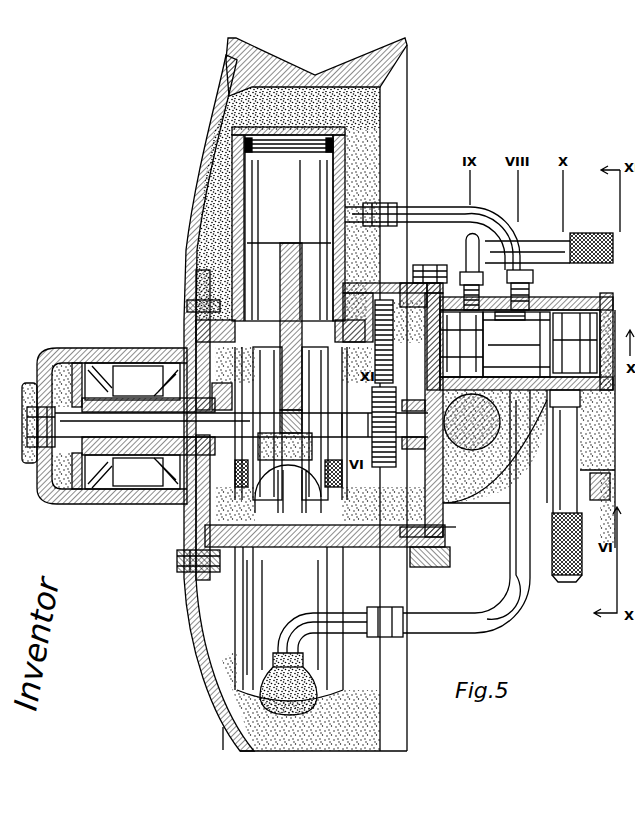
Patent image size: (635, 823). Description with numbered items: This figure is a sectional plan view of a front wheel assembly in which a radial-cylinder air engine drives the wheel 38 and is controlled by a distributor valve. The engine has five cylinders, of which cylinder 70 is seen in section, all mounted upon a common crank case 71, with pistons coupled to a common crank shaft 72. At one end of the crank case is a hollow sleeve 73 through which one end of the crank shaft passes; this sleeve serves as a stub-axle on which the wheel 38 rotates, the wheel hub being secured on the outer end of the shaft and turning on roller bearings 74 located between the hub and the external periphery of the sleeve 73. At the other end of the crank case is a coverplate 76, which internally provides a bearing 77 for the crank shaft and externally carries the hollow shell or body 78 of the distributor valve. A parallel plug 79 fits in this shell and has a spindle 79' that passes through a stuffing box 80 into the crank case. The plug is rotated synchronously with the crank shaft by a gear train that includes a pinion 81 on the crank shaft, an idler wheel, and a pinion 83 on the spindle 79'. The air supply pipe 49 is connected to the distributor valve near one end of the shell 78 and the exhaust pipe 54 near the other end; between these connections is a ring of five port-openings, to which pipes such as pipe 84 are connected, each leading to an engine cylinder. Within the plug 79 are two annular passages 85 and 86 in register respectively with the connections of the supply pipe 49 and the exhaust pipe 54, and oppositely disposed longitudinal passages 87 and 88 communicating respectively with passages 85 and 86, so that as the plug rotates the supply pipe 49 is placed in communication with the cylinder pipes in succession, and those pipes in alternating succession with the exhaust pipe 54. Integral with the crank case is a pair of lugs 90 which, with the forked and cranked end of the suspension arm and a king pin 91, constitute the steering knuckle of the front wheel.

The wheel 38 is at (213, 215).
The cylinder 70 is at (343, 190).
The crank case 71 is at (275, 547).
The crank shaft 72 is at (227, 427).
The hollow sleeve 73 is at (125, 392).
The roller bearings 74 is at (132, 472).
The coverplate 76 is at (459, 527).
The bearing 77 is at (420, 470).
The hollow shell or body 78 is at (572, 302).
The parallel plug 79 is at (520, 326).
The spindle 79' is at (433, 272).
The stuffing box 80 is at (392, 400).
The pinion 81 is at (387, 462).
The pinion 83 is at (372, 290).
The pipe 84 is at (421, 216).
The annular passage 85 is at (461, 344).
The annular passage 86 is at (575, 343).
The longitudinal passage 87 is at (505, 322).
The longitudinal passage 88 is at (516, 344).
The lugs 90 is at (505, 505).
The king pin 91 is at (474, 455).
The air supply pipe 49 is at (538, 241).
The exhaust pipe 54 is at (570, 578).